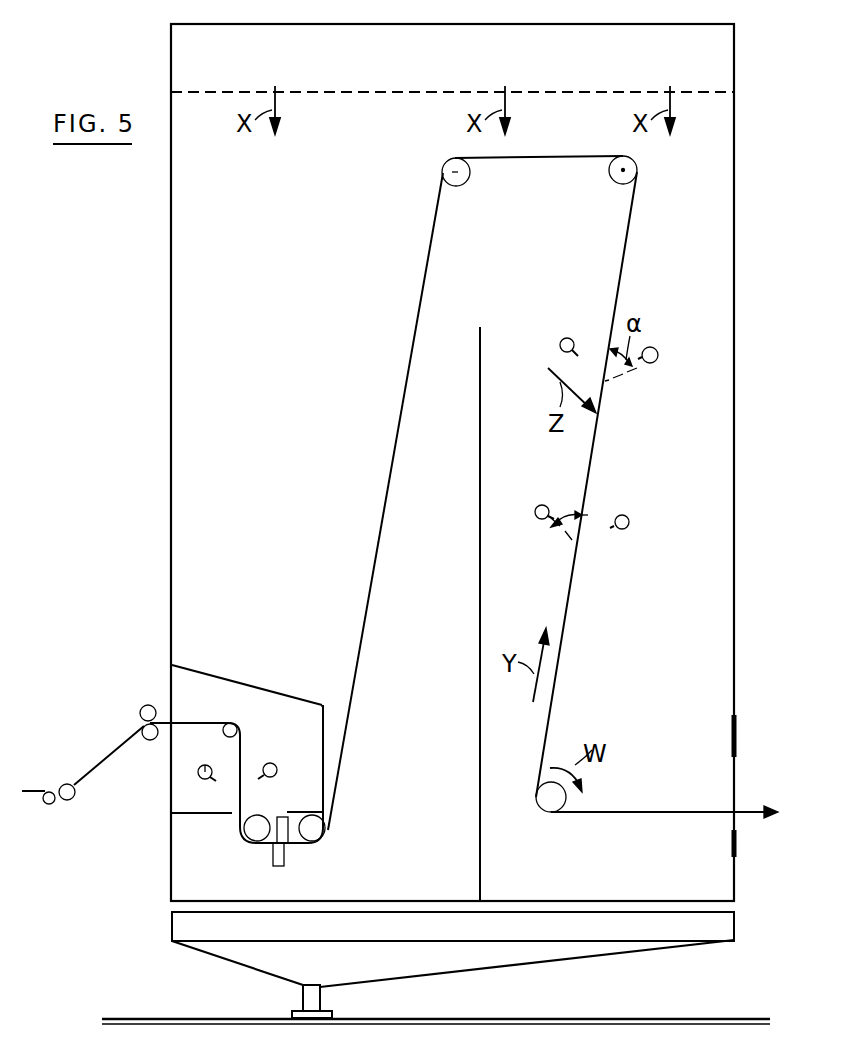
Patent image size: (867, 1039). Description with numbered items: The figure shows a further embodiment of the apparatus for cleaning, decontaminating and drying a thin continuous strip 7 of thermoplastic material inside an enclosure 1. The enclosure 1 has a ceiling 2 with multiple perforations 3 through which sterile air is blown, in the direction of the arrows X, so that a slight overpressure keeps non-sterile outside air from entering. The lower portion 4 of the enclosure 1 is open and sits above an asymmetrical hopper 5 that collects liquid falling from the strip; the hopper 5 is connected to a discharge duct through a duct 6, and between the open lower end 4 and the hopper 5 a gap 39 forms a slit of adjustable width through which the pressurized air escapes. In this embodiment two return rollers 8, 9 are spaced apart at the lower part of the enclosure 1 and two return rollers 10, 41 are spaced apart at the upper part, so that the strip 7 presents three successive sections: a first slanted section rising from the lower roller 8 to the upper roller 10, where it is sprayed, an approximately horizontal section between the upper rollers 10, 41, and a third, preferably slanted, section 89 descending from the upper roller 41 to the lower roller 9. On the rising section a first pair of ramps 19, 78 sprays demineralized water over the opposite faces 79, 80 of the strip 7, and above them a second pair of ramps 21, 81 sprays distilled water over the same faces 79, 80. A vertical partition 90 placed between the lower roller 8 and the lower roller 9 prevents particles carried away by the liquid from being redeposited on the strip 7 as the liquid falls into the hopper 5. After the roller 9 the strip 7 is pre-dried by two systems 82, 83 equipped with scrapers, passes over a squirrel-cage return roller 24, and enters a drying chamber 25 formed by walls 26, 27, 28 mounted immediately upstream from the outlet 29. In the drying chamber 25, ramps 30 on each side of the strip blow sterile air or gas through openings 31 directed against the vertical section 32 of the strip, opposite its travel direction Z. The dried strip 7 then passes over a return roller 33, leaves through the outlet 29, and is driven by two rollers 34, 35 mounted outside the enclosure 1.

The enclosure 1 is at (740, 200).
The ceiling 2 is at (414, 90).
The perforations 3 is at (292, 90).
The lower portion 4 is at (736, 870).
The hopper 5 is at (253, 950).
The duct 6 is at (320, 997).
The strip 7 is at (756, 800).
The lower return roller 8 is at (553, 810).
The lower roller 9 is at (316, 832).
The upper roller 10 is at (622, 170).
The ramp 19 is at (627, 529).
The ramp 21 is at (658, 362).
The return roller 24 is at (259, 832).
The drying chamber 25 is at (251, 708).
The wall 26 is at (215, 674).
The wall 27 is at (326, 716).
The wall 28 is at (192, 818).
The outlet 29 is at (170, 726).
The ramps 30 is at (300, 764).
The openings 31 is at (216, 778).
The vertical section 32 is at (242, 757).
The return roller 33 is at (229, 724).
The roller 34 is at (147, 705).
The roller 35 is at (148, 741).
The gap 39 is at (660, 904).
The upper roller 41 is at (446, 168).
The ramp 78 is at (542, 512).
The face 79 is at (566, 596).
The face 80 is at (566, 614).
The ramp 81 is at (568, 338).
The pre-drying system 82 is at (283, 815).
The pre-drying system 83 is at (278, 867).
The third section 89 is at (405, 388).
The vertical partition 90 is at (481, 338).